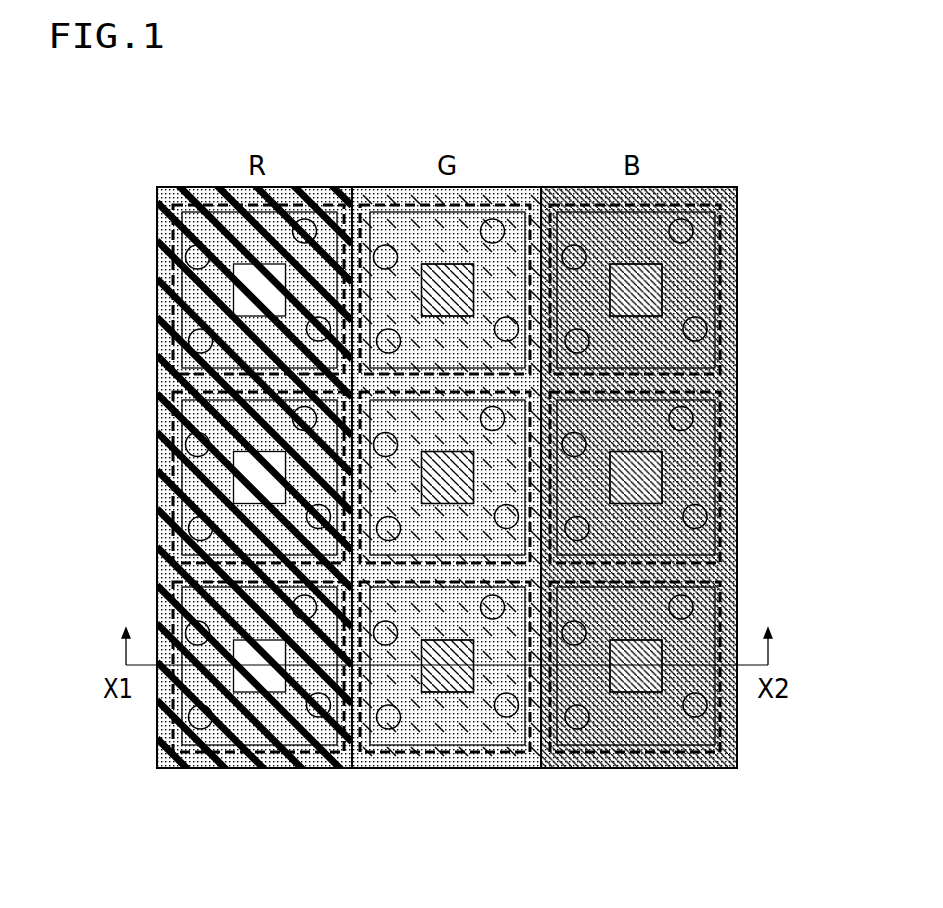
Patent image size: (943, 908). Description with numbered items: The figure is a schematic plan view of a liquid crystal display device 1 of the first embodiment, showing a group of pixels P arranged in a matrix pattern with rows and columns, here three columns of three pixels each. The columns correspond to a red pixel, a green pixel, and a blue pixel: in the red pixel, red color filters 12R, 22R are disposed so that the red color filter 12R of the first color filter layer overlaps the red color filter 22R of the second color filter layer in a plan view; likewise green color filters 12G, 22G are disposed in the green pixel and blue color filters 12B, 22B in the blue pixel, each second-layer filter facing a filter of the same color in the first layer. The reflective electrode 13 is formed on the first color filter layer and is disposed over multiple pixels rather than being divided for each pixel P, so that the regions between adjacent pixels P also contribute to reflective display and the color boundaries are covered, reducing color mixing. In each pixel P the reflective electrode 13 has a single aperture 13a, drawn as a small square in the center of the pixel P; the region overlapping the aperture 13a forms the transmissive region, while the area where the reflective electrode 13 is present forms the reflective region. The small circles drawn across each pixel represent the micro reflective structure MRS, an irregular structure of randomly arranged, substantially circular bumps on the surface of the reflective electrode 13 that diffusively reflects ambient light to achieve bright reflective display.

The liquid crystal display device 1 is at (755, 163).
The reflective electrode 13 is at (157, 707).
The aperture 13a is at (283, 720).
The pixel P is at (157, 740).
The micro reflective structure MRS is at (203, 720).
The red color filter 12R is at (268, 768).
The red color filter 22R is at (268, 768).
The green color filter 12G is at (433, 768).
The green color filter 22G is at (433, 768).
The blue color filter 12B is at (620, 768).
The blue color filter 22B is at (620, 768).